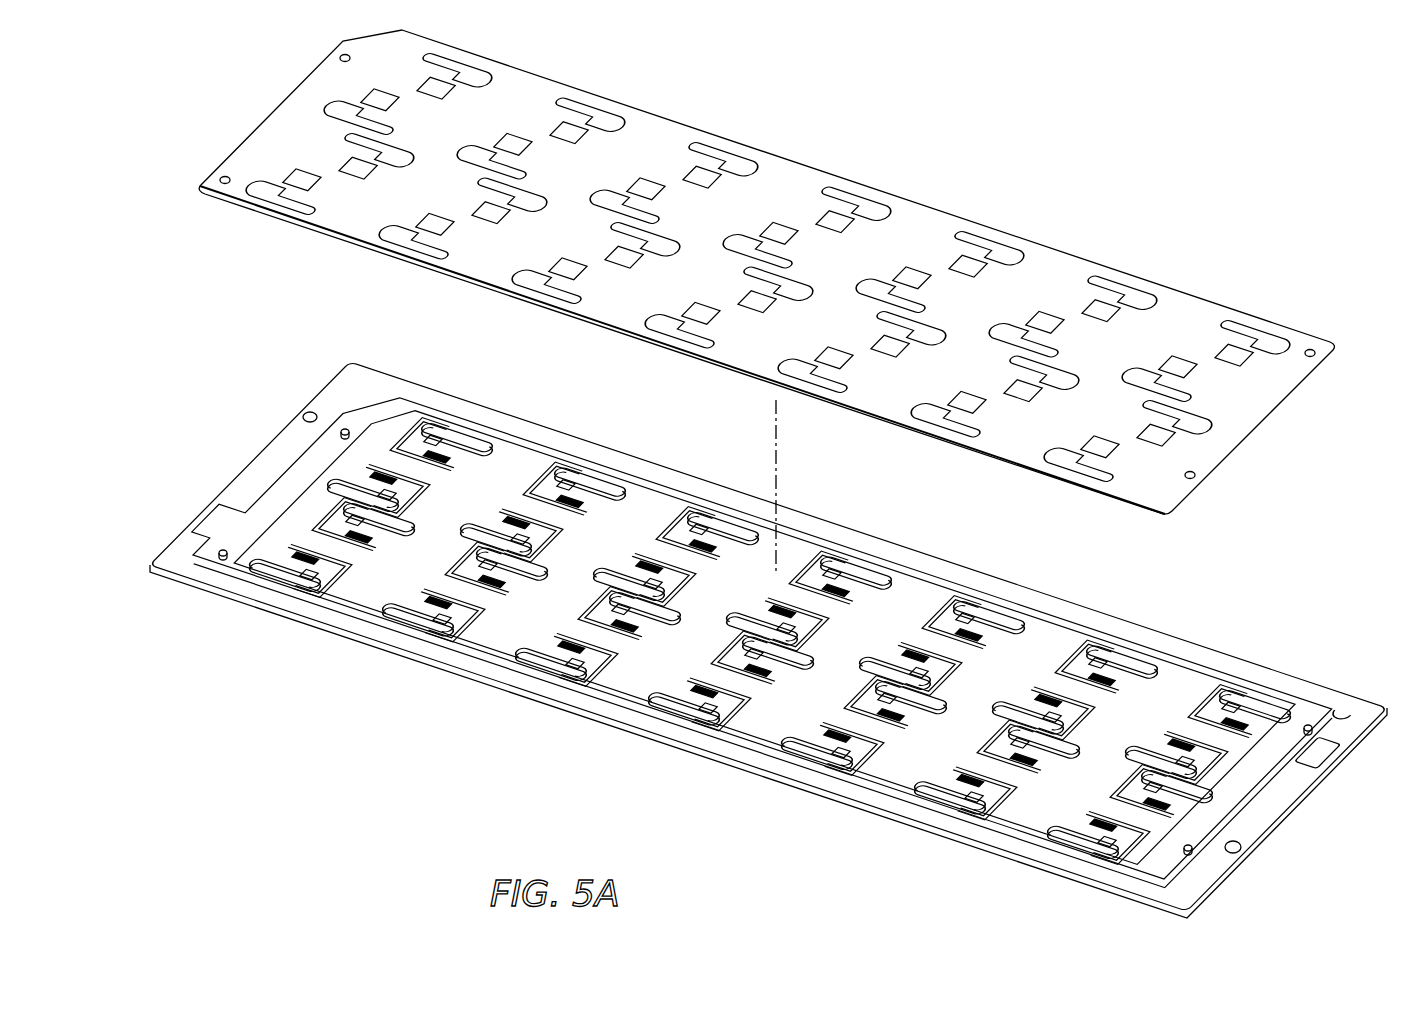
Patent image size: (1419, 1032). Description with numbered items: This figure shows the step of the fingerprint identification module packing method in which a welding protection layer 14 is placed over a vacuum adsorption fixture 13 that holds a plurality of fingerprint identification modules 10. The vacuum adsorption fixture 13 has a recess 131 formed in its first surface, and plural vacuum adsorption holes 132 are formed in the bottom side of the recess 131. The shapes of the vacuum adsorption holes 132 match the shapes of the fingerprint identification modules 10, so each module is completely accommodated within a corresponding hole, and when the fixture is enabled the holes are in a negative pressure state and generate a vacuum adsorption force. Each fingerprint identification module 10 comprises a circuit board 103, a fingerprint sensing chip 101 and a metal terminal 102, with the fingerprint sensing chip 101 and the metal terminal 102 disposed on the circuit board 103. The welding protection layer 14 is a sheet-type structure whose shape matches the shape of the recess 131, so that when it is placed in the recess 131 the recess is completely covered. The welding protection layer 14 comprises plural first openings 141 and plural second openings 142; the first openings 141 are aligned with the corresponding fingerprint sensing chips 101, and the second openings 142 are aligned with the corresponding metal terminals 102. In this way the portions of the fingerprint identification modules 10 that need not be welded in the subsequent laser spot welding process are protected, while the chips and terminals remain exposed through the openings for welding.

The fingerprint identification module 10 is at (1375, 603).
The fingerprint sensing chip 101 is at (1275, 700).
The metal terminal 102 is at (1240, 710).
The circuit board 103 is at (1218, 703).
The vacuum adsorption fixture 13 is at (983, 598).
The recess 131 is at (1030, 612).
The vacuum adsorption hole 132 is at (1090, 648).
The welding protection layer 14 is at (790, 178).
The first opening 141 is at (1275, 341).
The second opening 142 is at (1225, 348).